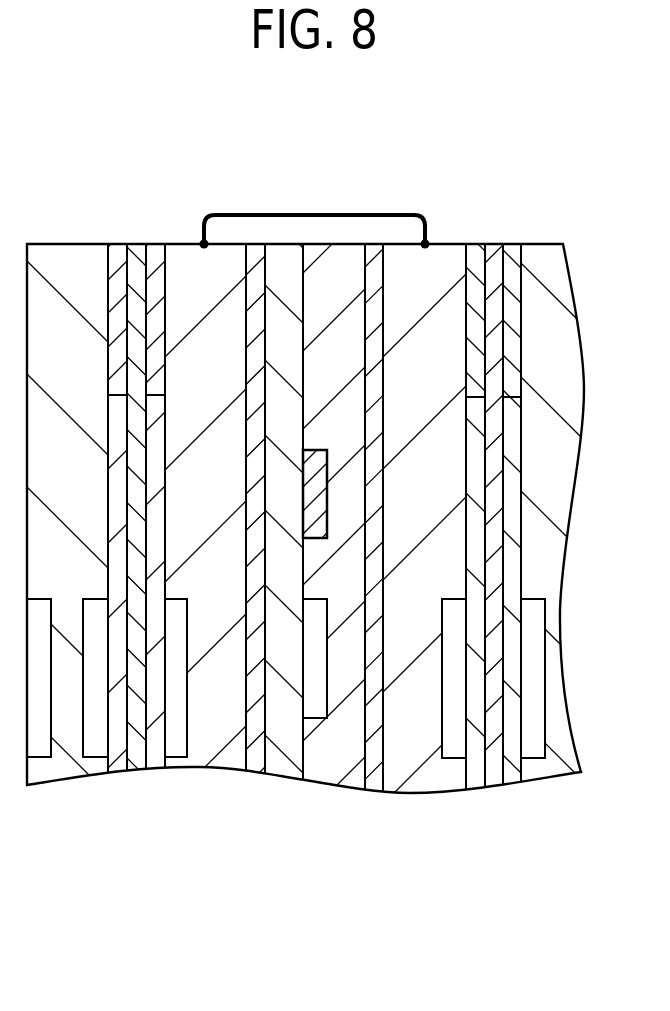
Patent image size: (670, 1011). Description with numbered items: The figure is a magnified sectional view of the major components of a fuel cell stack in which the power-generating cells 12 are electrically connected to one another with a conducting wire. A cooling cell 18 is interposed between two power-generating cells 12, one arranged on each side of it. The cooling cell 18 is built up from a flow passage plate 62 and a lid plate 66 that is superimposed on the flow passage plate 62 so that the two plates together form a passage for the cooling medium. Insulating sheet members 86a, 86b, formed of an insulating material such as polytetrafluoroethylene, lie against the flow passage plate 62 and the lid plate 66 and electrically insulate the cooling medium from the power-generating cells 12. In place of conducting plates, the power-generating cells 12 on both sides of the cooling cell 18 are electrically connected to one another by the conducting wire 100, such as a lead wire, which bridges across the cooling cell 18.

The power-generating cell 12 is at (243, 189).
The conducting wire 100 is at (313, 213).
The cooling cell 18 is at (302, 587).
The insulating sheet member 86b is at (256, 762).
The lid plate 66 is at (285, 768).
The flow passage plate 62 is at (335, 758).
The insulating sheet member 86a is at (383, 581).